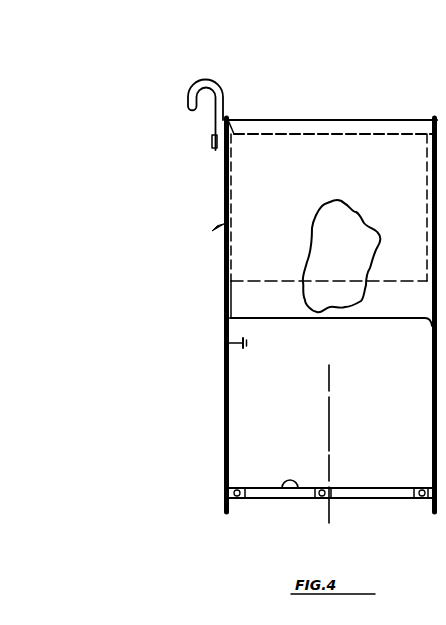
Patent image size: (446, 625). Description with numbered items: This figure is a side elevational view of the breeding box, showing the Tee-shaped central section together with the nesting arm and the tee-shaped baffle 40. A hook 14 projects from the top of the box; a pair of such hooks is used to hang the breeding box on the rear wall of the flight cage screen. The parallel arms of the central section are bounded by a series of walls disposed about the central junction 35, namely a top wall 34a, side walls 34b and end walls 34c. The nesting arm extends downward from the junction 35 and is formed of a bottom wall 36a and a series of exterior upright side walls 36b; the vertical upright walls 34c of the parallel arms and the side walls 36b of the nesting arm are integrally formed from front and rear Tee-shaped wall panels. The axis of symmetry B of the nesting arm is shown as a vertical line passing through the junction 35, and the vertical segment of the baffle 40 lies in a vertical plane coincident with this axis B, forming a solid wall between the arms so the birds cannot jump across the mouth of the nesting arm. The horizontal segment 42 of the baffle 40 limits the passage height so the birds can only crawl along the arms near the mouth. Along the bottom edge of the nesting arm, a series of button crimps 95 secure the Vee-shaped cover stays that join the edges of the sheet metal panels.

The hooks 14 is at (205, 76).
The top wall 34a is at (297, 133).
The side walls 34b is at (224, 193).
The end walls 34c is at (263, 240).
The central junction 35 is at (327, 213).
The bottom wall 36a is at (279, 489).
The side walls 36b is at (243, 341).
The tee-shaped baffle 40 is at (214, 230).
The horizontal segment 42 is at (325, 279).
The button crimps 95 is at (420, 498).
The axis of symmetry B is at (329, 420).